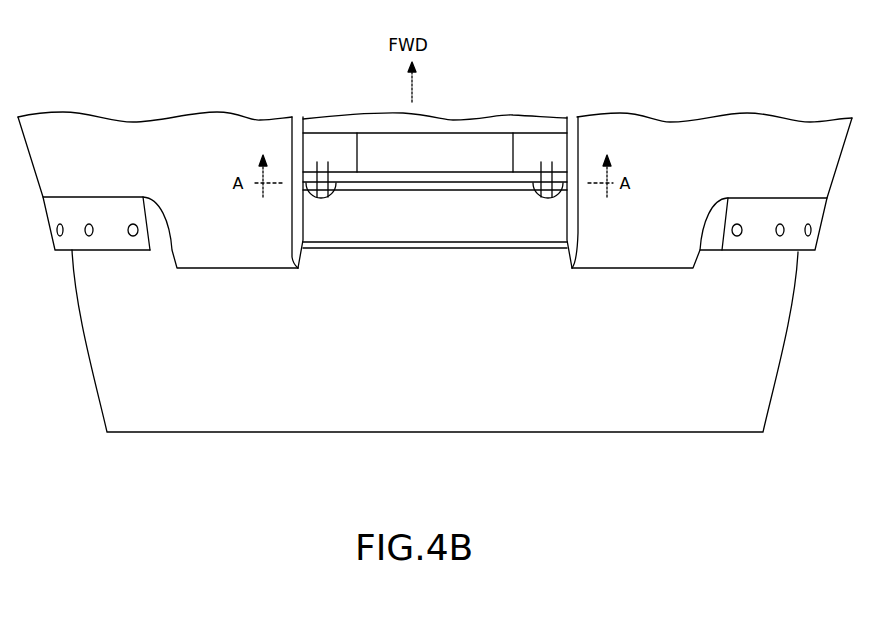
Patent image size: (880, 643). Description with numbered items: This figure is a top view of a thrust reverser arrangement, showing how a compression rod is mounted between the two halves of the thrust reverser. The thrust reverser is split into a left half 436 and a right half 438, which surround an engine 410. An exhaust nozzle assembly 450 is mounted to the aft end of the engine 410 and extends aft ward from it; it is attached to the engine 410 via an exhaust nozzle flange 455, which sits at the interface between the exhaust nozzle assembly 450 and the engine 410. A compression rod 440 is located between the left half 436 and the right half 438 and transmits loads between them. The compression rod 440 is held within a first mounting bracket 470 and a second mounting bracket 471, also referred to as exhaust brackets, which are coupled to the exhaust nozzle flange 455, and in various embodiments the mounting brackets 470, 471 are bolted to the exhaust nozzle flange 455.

The engine 410 is at (443, 145).
The left half 436 is at (188, 140).
The right half 438 is at (685, 140).
The compression rod 440 is at (441, 180).
The exhaust nozzle assembly 450 is at (428, 407).
The exhaust nozzle flange 455 is at (441, 190).
The first mounting bracket 470 is at (317, 167).
The second mounting bracket 471 is at (552, 167).